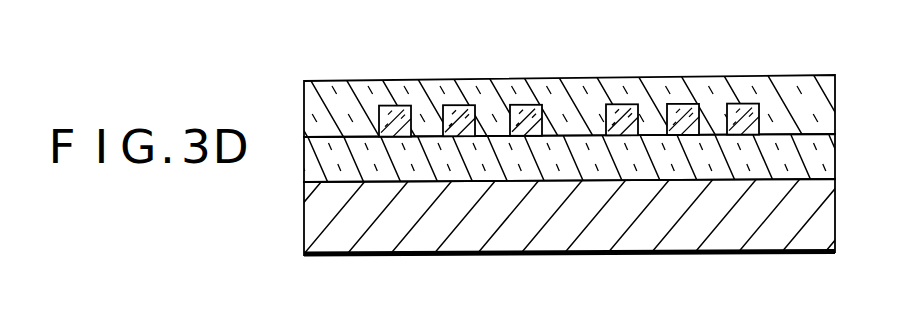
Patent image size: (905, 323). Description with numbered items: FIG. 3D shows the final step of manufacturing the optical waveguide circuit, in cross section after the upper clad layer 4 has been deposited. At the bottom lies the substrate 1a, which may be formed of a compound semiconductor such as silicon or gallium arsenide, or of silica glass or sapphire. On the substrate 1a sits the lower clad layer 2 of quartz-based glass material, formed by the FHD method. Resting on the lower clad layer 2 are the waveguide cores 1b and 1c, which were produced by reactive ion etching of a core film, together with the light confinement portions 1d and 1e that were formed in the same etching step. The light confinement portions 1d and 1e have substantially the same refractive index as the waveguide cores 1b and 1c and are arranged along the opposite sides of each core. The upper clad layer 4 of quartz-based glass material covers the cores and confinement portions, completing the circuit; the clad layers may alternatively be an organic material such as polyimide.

The substrate 1a is at (633, 235).
The waveguide core 1b is at (460, 110).
The waveguide core 1c is at (683, 110).
The light confinement portion 1d is at (401, 110).
The light confinement portion 1e is at (522, 110).
The lower clad layer 2 is at (462, 170).
The upper clad layer 4 is at (789, 87).